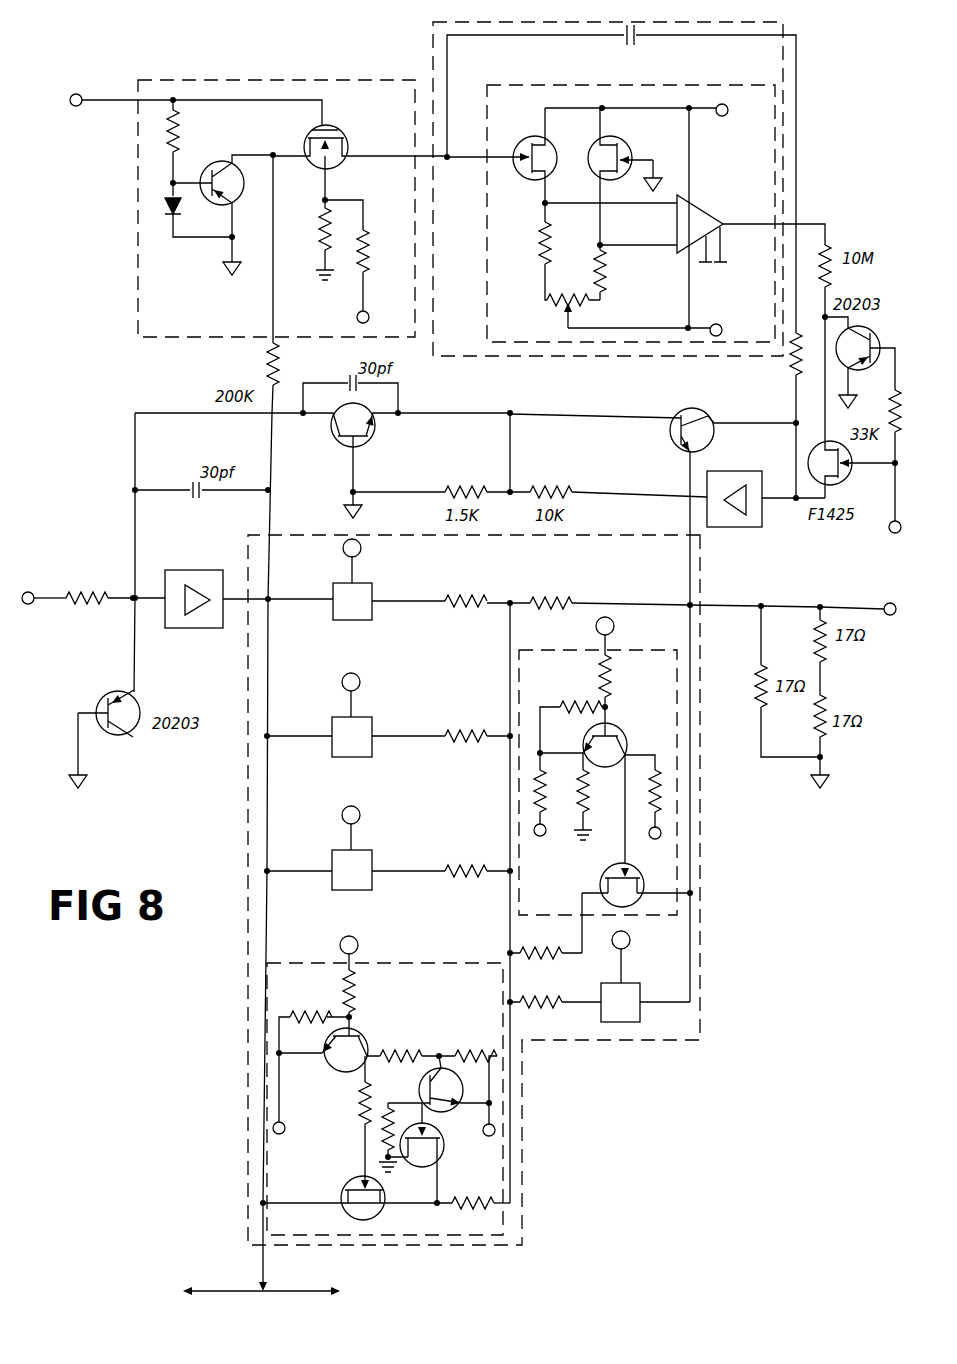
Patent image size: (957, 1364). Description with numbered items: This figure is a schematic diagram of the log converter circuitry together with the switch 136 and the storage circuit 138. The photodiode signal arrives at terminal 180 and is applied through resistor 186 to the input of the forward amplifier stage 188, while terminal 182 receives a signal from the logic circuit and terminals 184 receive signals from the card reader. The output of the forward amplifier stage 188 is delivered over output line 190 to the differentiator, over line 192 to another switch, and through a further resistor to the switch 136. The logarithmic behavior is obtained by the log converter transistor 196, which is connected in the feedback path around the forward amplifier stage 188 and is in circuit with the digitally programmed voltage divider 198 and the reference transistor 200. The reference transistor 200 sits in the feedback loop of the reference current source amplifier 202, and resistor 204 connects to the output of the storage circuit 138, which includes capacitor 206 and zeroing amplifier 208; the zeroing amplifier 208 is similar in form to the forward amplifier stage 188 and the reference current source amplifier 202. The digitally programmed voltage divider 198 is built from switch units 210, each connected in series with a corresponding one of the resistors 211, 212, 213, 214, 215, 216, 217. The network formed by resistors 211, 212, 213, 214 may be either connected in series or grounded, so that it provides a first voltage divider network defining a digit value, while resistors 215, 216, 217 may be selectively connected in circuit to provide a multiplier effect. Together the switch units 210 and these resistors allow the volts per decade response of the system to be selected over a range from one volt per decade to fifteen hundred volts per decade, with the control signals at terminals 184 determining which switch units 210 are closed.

The terminal 182 is at (78, 94).
The switch 136 is at (233, 80).
The storage circuit 138 is at (433, 68).
The zeroing amplifier 208 is at (521, 85).
The capacitor 206 is at (624, 38).
The resistor 204 is at (793, 378).
The reference transistor 200 is at (676, 417).
The reference current source amplifier 202 is at (710, 471).
The log converter transistor 196 is at (346, 448).
The terminal 180 is at (29, 591).
The resistor 186 is at (86, 592).
The forward amplifier stage 188 is at (196, 570).
The digitally programmed voltage divider 198 is at (245, 815).
The terminals 184 is at (361, 551).
The switch units 210 is at (333, 622).
The resistor 211 is at (452, 600).
The resistor 212 is at (452, 735).
The resistor 213 is at (450, 870).
The resistor 214 is at (485, 1205).
The resistor 215 is at (565, 603).
The resistor 216 is at (556, 953).
The resistor 217 is at (548, 1002).
The line 192 is at (218, 1290).
The output line 190 is at (295, 1290).